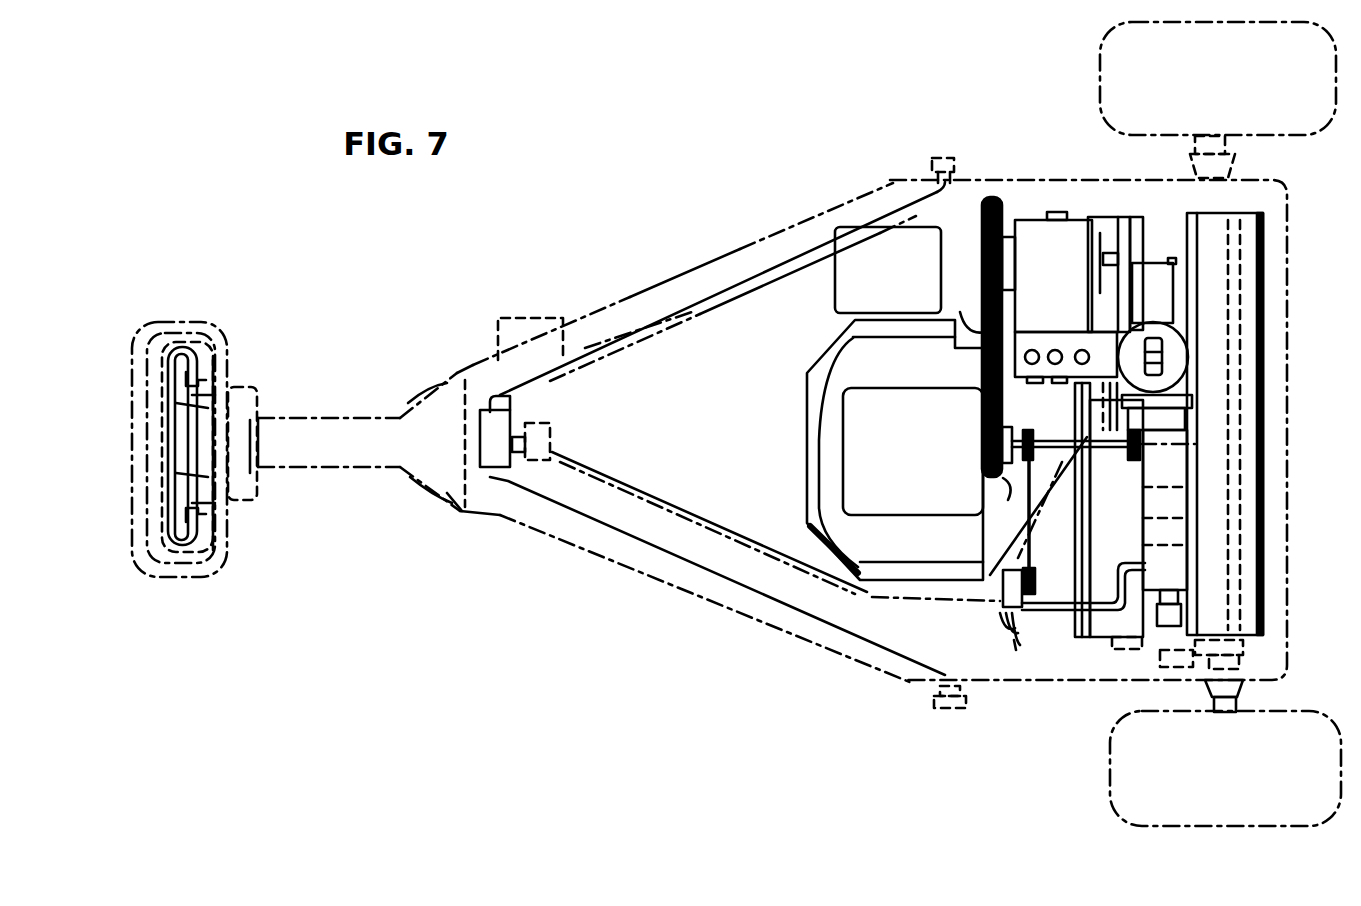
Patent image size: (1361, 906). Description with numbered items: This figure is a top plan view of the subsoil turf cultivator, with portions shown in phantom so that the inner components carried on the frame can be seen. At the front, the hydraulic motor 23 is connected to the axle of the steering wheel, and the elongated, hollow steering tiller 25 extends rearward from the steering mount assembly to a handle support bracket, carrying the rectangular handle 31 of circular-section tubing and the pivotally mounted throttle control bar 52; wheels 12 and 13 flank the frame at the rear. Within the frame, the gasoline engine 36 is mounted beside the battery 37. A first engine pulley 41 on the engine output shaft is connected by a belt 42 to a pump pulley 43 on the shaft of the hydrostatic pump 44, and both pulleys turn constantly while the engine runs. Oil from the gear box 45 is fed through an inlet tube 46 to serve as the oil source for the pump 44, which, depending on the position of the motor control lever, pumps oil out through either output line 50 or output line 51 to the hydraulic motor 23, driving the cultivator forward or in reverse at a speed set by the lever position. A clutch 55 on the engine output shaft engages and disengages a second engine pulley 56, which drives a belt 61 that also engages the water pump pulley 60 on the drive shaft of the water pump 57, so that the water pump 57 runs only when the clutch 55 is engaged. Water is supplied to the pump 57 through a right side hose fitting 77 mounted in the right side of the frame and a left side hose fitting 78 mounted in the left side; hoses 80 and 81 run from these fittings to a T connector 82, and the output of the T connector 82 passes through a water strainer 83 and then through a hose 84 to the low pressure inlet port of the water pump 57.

The rear wheel 12 is at (1112, 792).
The rear wheel 13 is at (1100, 80).
The hydraulic motor 23 is at (533, 318).
The steering tiller 25 is at (296, 418).
The rectangular handle 31 is at (178, 322).
The gasoline engine 36 is at (896, 471).
The battery 37 is at (872, 291).
The first engine pulley 41 is at (1036, 442).
The belt 42 is at (1037, 490).
The pump pulley 43 is at (1035, 582).
The hydrostatic pump 44 is at (1002, 600).
The gear box 45 is at (1178, 467).
The inlet tube 46 is at (1063, 612).
The output line 50 is at (996, 637).
The output line 51 is at (1016, 650).
The throttle control bar 52 is at (200, 355).
The clutch 55 is at (1008, 428).
The second engine pulley 56 is at (1005, 503).
The water pump 57 is at (1037, 298).
The water pump pulley 60 is at (1002, 226).
The belt 61 is at (964, 306).
The right side hose fitting 77 is at (946, 702).
The left side hose fitting 78 is at (957, 164).
The hose 80 is at (694, 560).
The hose 81 is at (682, 300).
The T connector 82 is at (514, 425).
The water strainer 83 is at (549, 435).
The hose 84 is at (757, 536).